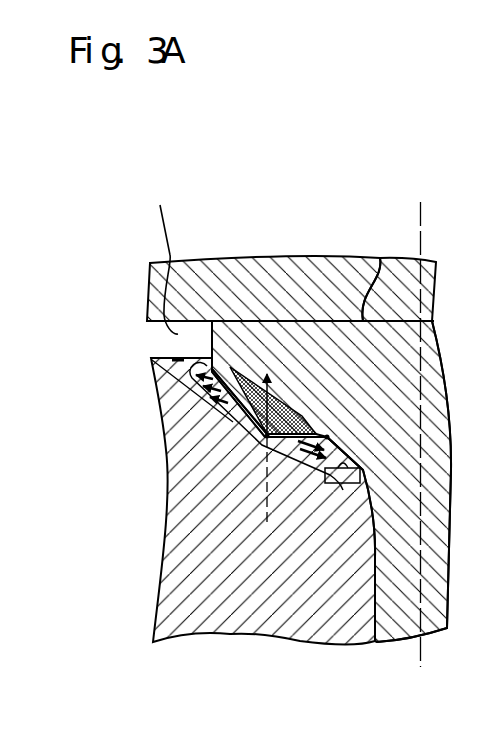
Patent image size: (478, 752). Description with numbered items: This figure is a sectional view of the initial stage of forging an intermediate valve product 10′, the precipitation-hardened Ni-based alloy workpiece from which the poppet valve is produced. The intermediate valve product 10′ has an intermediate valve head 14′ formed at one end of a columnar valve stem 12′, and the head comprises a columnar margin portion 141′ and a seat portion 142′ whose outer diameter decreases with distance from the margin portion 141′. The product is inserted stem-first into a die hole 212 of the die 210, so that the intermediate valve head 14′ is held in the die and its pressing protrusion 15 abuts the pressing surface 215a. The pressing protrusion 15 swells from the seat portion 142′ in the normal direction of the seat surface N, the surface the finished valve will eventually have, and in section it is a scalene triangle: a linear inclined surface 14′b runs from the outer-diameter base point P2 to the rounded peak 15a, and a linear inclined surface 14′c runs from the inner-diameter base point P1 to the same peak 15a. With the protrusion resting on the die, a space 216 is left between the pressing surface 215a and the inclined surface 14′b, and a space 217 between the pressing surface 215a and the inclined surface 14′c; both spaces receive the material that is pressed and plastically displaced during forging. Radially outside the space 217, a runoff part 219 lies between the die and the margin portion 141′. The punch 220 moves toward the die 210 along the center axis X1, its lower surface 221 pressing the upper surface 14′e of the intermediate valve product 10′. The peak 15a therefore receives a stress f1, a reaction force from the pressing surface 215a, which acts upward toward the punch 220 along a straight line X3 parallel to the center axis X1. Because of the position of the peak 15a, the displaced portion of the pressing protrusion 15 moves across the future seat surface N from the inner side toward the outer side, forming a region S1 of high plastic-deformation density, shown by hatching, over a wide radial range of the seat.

The intermediate valve head 14′ is at (332, 158).
The margin portion 141′ is at (231, 365).
The seat portion 142′ is at (302, 418).
The lower surface 221 is at (159, 255).
The die hole 212 is at (189, 344).
The intermediate valve product 10′ is at (258, 314).
The upper surface 14′e is at (380, 258).
The punch 220 is at (155, 283).
The runoff part 219 is at (152, 357).
The base point P2 is at (157, 384).
The inclined surface 14′b is at (196, 390).
The space 216 is at (228, 412).
The pressing surface 215a is at (243, 455).
The die 210 is at (173, 555).
The region S1 is at (244, 336).
The stress f1 is at (275, 387).
The pressing protrusion 15 is at (303, 419).
The seat surface N is at (288, 437).
The base point P1 is at (330, 437).
The peak 15a is at (266, 438).
The inclined surface 14′c is at (338, 484).
The straight line X3 is at (265, 497).
The space 217 is at (340, 484).
The valve stem 12′ is at (389, 622).
The center axis X1 is at (418, 452).